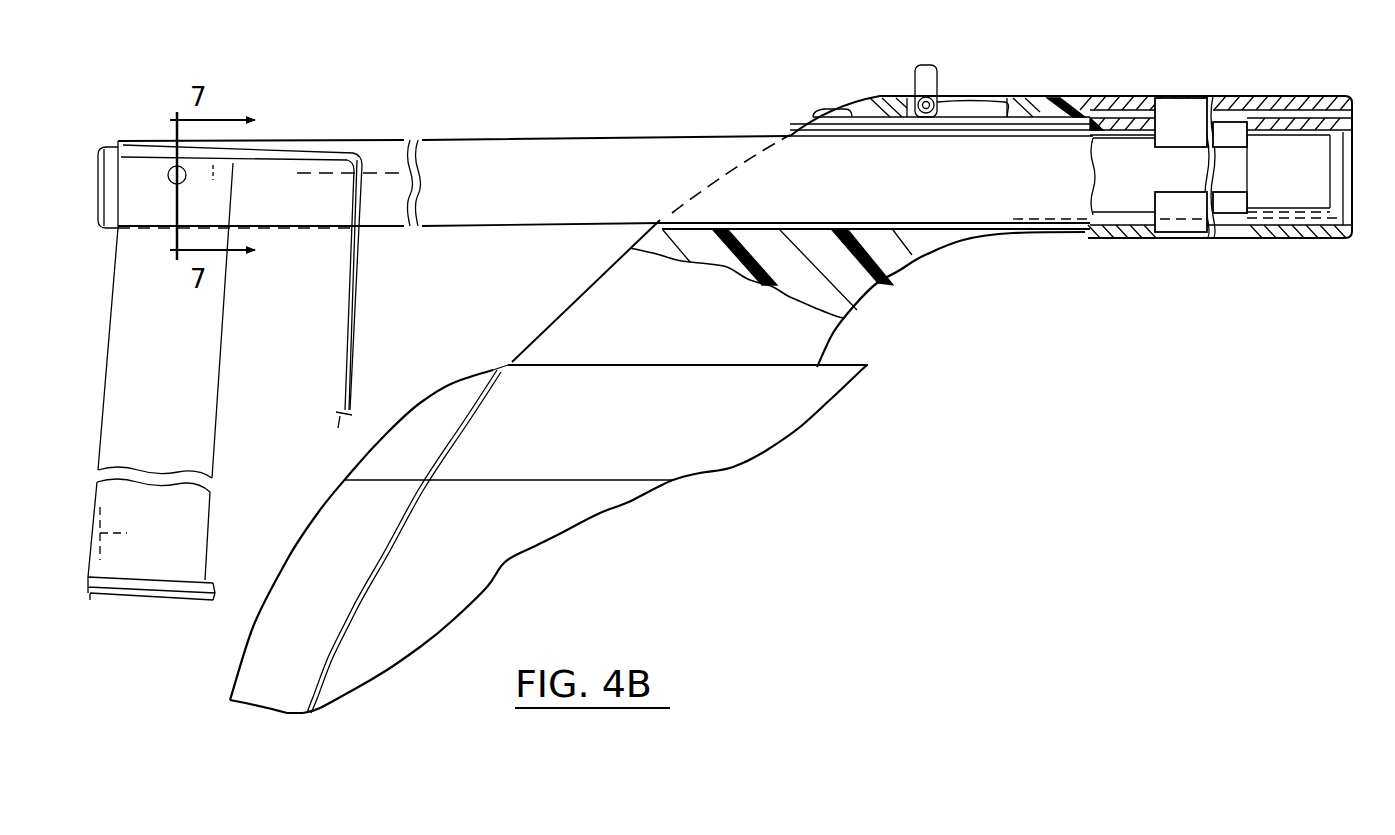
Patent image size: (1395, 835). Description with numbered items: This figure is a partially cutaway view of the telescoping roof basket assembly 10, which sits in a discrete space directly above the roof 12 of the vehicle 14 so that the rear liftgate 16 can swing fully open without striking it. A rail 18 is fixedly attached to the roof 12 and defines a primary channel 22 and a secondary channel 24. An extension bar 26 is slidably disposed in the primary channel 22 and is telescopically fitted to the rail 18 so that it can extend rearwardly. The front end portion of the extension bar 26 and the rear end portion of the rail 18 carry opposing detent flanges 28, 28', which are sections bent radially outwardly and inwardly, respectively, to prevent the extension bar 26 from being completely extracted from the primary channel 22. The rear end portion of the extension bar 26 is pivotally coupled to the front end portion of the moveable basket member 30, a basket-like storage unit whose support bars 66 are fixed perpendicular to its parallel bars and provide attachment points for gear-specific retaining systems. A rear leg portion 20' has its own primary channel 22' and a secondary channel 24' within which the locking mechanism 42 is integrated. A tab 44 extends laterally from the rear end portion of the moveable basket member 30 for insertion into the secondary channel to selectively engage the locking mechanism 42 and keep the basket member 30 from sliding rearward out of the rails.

The basket assembly 10 is at (545, 58).
The roof 12 is at (847, 367).
The vehicle 14 is at (511, 362).
The rear liftgate 16 is at (253, 637).
The rail 18 is at (1280, 94).
The rear leg portion 20' is at (651, 248).
The primary channel 22 is at (1307, 135).
The primary channel 22' is at (941, 144).
The secondary channel 24 is at (1221, 131).
The secondary channel 24' is at (940, 96).
The extension bar 26 is at (560, 138).
The detent flange 28 is at (1241, 165).
The detent flange 28' is at (1251, 242).
The moveable basket member 30 is at (360, 293).
The locking mechanism 42 is at (940, 77).
The tab 44 is at (110, 537).
The support bar 66 is at (343, 332).